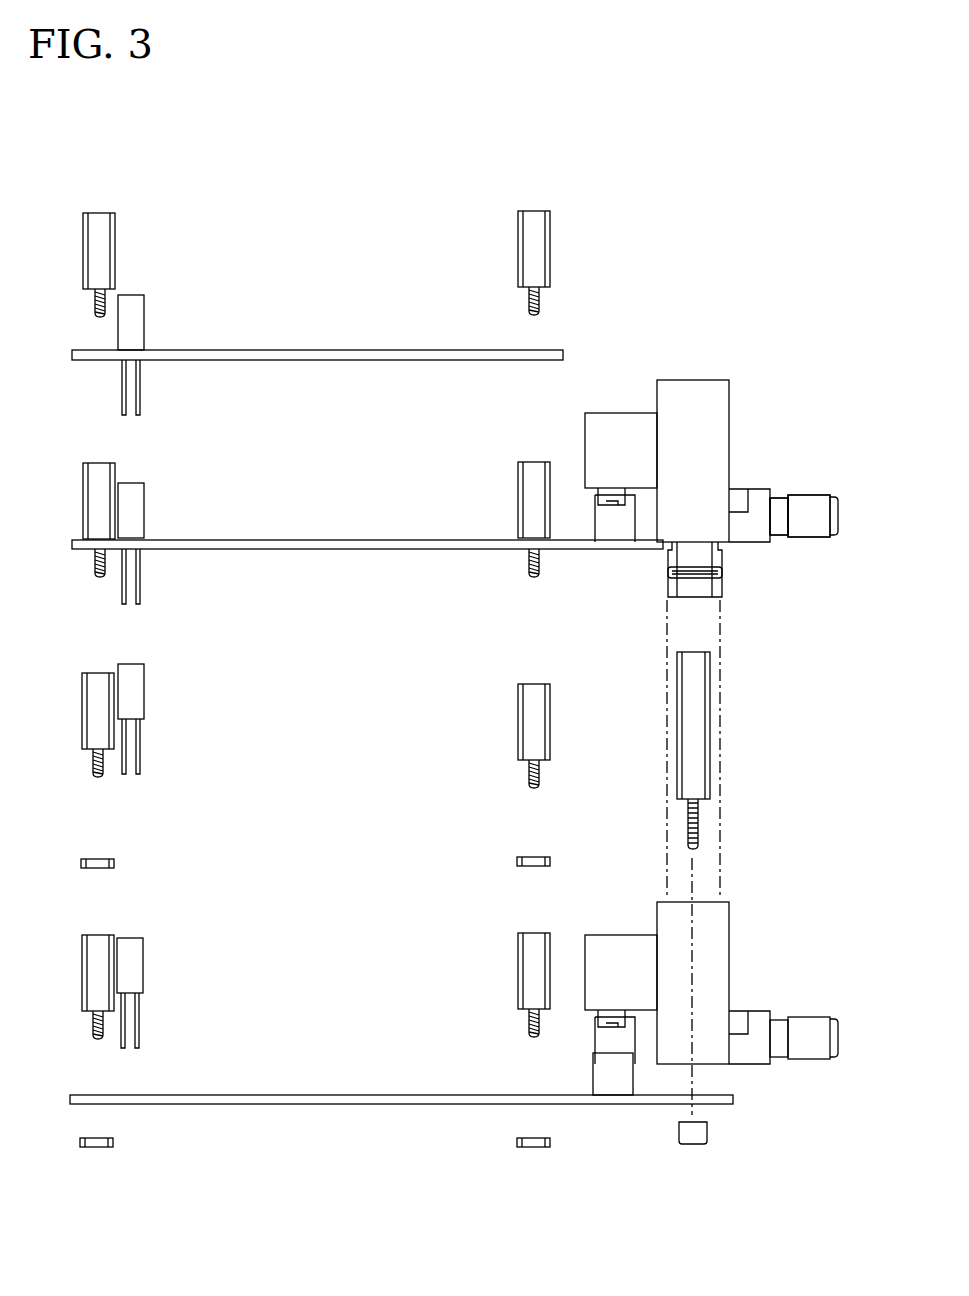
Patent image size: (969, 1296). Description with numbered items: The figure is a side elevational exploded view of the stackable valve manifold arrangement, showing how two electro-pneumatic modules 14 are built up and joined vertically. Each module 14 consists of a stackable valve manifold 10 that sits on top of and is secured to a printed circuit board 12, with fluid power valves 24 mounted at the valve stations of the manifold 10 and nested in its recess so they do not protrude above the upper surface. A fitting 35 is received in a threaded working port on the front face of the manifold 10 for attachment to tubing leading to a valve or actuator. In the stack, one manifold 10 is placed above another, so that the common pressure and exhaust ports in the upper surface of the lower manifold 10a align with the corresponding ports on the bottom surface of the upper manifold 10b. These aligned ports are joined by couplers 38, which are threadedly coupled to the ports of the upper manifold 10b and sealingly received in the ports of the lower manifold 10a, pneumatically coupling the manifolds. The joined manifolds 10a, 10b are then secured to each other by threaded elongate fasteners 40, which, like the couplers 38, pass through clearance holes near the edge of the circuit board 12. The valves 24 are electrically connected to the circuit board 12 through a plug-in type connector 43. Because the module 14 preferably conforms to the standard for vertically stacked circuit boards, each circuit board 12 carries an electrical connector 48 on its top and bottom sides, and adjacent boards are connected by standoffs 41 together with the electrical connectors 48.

The stackable valve manifold 10 is at (724, 668).
The lower manifold 10a is at (722, 985).
The upper manifold 10b is at (724, 466).
The printed circuit board 12 is at (245, 1101).
The electro-pneumatic module 14 is at (276, 545).
The fluid power valve 24 is at (633, 262).
The fitting 35 is at (819, 520).
The coupler 38 is at (722, 588).
The threaded elongate fastener 40 is at (698, 720).
The standoff 41 is at (92, 248).
The plug-in type connector 43 is at (612, 1078).
The electrical connector 48 is at (133, 305).